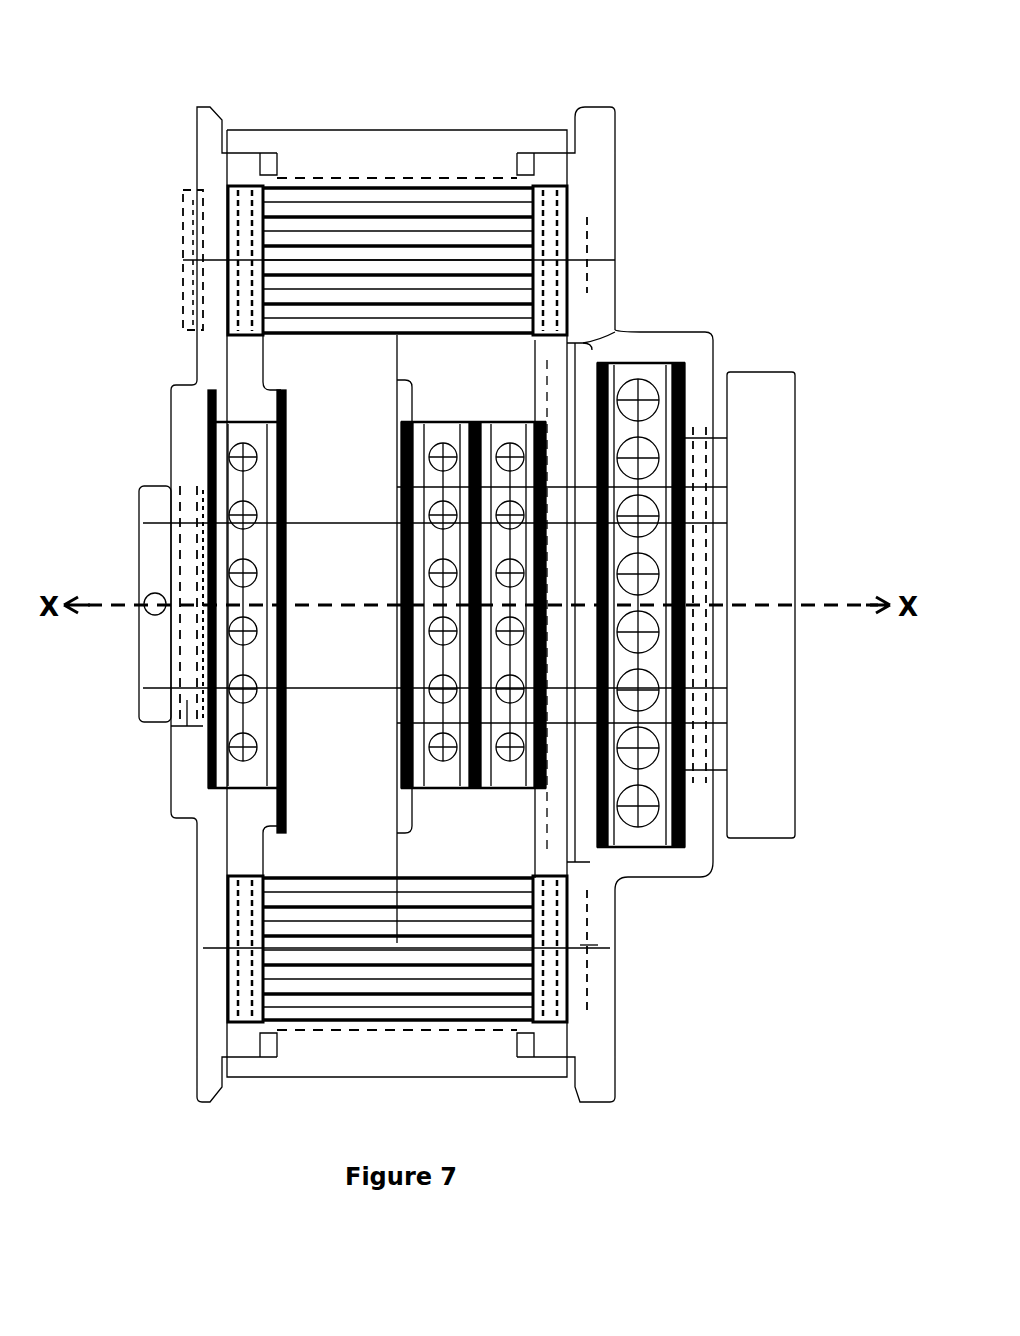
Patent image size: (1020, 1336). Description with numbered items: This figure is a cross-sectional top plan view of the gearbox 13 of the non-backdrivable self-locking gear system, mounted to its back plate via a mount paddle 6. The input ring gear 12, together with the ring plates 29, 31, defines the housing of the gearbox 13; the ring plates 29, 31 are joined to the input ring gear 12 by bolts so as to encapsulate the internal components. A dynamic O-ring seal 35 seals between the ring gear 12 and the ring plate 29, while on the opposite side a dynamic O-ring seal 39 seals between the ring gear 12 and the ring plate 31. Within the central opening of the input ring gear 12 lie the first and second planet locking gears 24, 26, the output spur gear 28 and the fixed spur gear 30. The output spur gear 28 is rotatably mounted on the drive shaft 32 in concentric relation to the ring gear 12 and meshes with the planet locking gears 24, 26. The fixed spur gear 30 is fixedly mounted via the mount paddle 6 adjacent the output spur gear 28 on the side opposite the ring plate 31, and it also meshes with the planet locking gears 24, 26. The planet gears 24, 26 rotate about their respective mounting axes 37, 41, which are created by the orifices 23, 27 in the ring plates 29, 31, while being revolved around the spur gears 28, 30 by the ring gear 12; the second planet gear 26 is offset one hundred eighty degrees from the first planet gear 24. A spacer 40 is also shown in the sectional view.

The mount paddle 6 is at (765, 390).
The input ring gear 12 is at (272, 1080).
The gearbox 13 is at (427, 60).
The orifice 23 is at (213, 990).
The first planet locking gear 24 is at (435, 205).
The second planet locking gear 26 is at (448, 992).
The orifice 27 is at (588, 217).
The output spur gear 28 is at (315, 845).
The ring plate 29 is at (615, 330).
The fixed spur gear 30 is at (495, 843).
The ring plate 31 is at (210, 168).
The drive shaft 32 is at (157, 651).
The dynamic O-ring seal 35 is at (693, 773).
The mounting axis 37 is at (597, 950).
The dynamic O-ring seal 39 is at (187, 708).
The spacer 40 is at (155, 504).
The mounting axis 41 is at (188, 257).